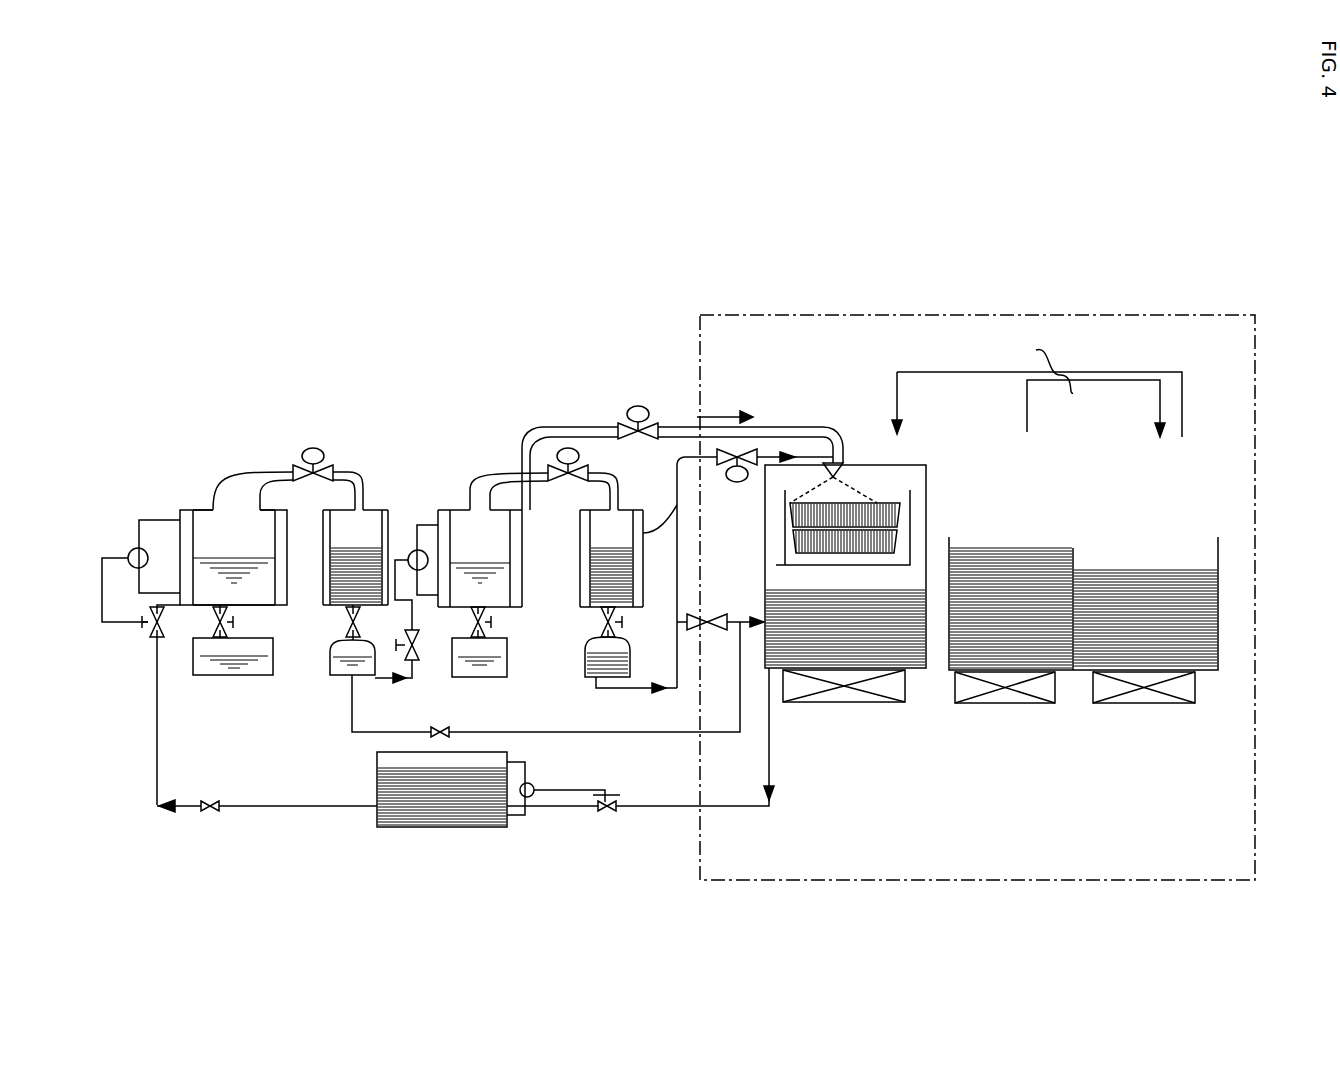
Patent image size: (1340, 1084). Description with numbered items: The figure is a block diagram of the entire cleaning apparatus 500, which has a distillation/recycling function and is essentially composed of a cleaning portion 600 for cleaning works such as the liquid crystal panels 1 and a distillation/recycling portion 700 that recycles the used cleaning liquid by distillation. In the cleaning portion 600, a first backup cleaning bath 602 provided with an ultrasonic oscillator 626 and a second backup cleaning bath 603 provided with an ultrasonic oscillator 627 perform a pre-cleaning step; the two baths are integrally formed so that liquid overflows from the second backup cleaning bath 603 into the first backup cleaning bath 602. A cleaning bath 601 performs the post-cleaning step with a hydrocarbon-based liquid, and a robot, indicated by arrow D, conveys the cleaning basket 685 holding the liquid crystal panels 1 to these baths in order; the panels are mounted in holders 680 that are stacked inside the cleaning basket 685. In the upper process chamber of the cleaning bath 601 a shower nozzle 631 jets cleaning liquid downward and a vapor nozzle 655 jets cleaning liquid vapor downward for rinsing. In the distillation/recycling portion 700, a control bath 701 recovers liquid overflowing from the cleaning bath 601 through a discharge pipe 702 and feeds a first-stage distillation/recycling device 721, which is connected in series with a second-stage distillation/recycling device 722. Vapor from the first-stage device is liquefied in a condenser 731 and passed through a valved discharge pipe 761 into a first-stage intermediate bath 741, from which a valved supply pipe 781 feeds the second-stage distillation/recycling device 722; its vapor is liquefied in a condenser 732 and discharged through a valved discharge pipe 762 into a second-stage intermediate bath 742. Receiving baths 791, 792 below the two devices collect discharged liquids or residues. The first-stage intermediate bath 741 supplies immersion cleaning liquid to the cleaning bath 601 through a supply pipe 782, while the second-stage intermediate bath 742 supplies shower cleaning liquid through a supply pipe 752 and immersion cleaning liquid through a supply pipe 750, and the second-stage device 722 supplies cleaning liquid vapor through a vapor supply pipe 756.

The cleaning apparatus 500 is at (252, 346).
The cleaning portion 600 is at (905, 307).
The shower nozzle 631 is at (847, 458).
The vapor nozzle 655 is at (860, 463).
The cleaning basket 685 is at (890, 490).
The liquid crystal panel 1 is at (890, 510).
The cleaning bath 601 is at (925, 506).
The holder 680 is at (893, 550).
The first-stage distillation/recycling device 721 is at (185, 510).
The discharge pipe 761 is at (372, 482).
The condenser 731 is at (370, 500).
The discharge pipe 762 is at (590, 465).
The vapor supply pipe 756 is at (678, 427).
The supply pipe 752 is at (770, 452).
The condenser 732 is at (662, 533).
The supply pipe 750 is at (730, 618).
The second-stage distillation/recycling device 722 is at (522, 592).
The receiving bath 791 is at (195, 652).
The first-stage intermediate bath 741 is at (345, 680).
The supply pipe 781 is at (416, 680).
The receiving bath 792 is at (506, 663).
The second-stage intermediate bath 742 is at (597, 675).
The supply pipe 782 is at (608, 733).
The distillation/recycling portion 700 is at (390, 877).
The control bath 701 is at (486, 828).
The discharge pipe 702 is at (771, 735).
The ultrasonic oscillator 626 is at (1200, 688).
The ultrasonic oscillator 627 is at (994, 696).
The second backup cleaning bath 603 is at (1064, 672).
The first backup cleaning bath 602 is at (1132, 672).